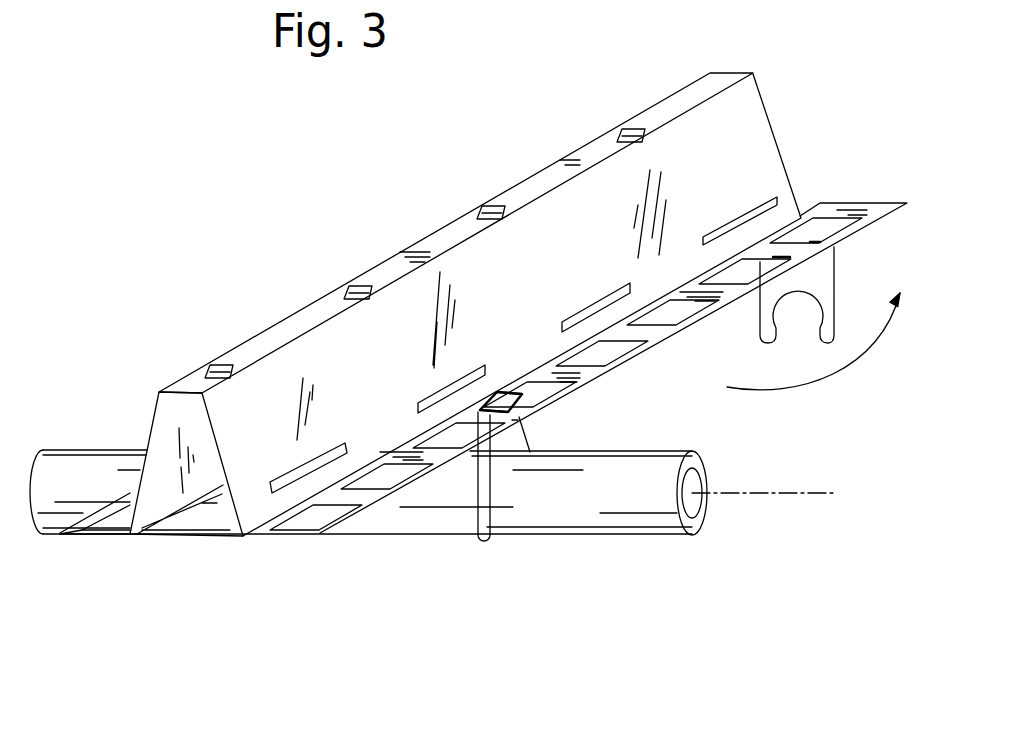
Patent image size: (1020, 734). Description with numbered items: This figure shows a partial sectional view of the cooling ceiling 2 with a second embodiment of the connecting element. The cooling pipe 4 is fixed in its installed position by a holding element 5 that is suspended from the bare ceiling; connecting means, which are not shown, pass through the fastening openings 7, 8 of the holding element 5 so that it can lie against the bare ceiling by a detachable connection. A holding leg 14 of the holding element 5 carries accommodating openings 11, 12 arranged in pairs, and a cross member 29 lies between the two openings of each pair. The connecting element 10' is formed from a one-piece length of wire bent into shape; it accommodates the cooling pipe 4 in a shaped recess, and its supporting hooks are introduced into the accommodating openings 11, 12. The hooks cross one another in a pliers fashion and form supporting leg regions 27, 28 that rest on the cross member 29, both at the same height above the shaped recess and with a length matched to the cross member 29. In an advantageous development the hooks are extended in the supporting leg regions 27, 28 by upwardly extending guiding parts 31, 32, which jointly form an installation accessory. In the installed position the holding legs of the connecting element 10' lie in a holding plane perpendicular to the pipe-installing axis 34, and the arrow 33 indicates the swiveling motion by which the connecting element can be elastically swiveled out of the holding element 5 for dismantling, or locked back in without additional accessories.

The cooling ceiling 2 is at (193, 603).
The cooling pipe 4 is at (634, 541).
The holding element 5 is at (287, 338).
The fastening opening 7 is at (490, 205).
The fastening opening 8 is at (628, 127).
The connecting element 10' is at (474, 519).
The accommodating opening 11 is at (450, 440).
The accommodating opening 12 is at (545, 393).
The holding leg 14 is at (723, 293).
The supporting leg region 27 is at (497, 393).
The supporting leg region 28 is at (515, 398).
The cross member 29 is at (515, 420).
The guiding part 31 is at (537, 362).
The guiding part 32 is at (455, 411).
The arrow 33 is at (830, 388).
The pipe-installing axis 34 is at (770, 496).